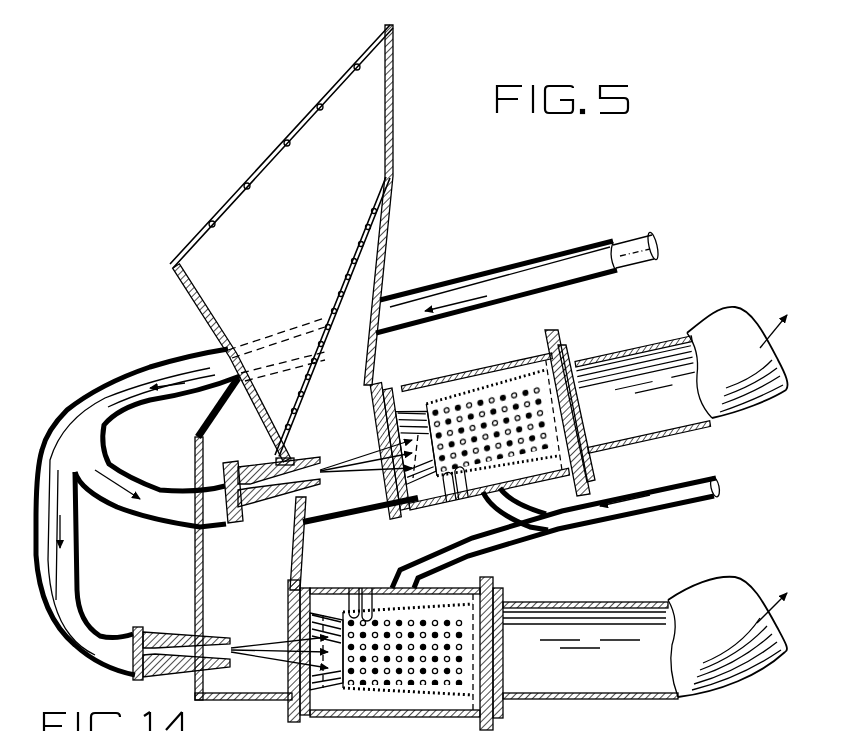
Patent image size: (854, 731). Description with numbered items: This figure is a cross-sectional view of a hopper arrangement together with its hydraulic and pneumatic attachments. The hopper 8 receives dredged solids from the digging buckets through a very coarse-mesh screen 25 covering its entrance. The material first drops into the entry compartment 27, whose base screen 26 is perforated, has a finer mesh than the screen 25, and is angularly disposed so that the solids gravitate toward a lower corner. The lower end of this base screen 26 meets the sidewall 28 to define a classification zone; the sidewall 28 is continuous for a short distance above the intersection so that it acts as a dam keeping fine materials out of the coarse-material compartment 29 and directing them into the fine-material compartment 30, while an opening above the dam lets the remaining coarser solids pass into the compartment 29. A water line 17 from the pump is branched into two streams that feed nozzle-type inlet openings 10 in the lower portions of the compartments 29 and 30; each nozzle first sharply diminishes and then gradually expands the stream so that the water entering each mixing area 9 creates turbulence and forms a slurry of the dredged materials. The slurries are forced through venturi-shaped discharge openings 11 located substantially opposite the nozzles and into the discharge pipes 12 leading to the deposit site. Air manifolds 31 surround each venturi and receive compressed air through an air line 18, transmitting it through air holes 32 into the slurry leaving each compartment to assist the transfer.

The hopper 8 is at (394, 140).
The mixing or dispersing area 9 is at (334, 547).
The hydraulic jet nozzle-type inlet opening 10 is at (263, 466).
The venturi-shaped discharge opening 11 is at (413, 392).
The discharge pipe 12 is at (624, 601).
The water line 17 is at (157, 470).
The air line 18 is at (700, 477).
The screen 25 is at (248, 182).
The base screen 26 is at (336, 298).
The entry compartment 27 is at (342, 176).
The sidewall 28 is at (193, 303).
The coarse-material compartment 29 is at (250, 568).
The fine-material compartment 30 is at (271, 381).
The air manifold 31 is at (508, 364).
The air holes 32 is at (467, 488).